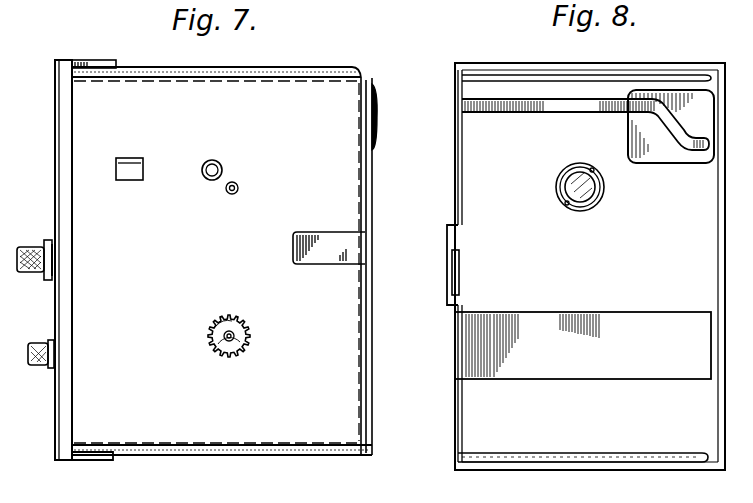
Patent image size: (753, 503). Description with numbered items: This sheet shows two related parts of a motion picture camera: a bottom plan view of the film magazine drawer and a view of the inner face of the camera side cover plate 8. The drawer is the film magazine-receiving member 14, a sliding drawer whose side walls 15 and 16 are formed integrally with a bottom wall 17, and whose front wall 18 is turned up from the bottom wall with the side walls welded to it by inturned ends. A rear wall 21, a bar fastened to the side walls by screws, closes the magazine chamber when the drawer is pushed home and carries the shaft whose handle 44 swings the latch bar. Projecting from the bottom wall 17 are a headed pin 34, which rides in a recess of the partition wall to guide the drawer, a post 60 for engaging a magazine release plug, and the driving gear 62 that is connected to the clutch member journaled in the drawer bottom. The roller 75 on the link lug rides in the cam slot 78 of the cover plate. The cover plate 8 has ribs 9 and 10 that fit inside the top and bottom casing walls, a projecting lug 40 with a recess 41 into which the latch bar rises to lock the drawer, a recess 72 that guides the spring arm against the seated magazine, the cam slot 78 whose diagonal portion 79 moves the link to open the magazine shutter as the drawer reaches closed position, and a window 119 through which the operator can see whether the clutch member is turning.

In FIG. 7, the film magazine-receiving member 14 is at (62, 52).
In FIG. 7, the side wall 15 is at (283, 77).
In FIG. 7, the side wall 16 is at (217, 452).
In FIG. 7, the bottom wall 17 is at (295, 430).
In FIG. 7, the front wall 18 is at (366, 173).
In FIG. 7, the rear wall 21 is at (62, 193).
In FIG. 7, the projecting headed pin 34 is at (218, 162).
In FIG. 7, the handle 44 is at (46, 280).
In FIG. 7, the post 60 is at (228, 196).
In FIG. 7, the driving gear 62 is at (218, 352).
In FIG. 7, the roller 75 is at (375, 104).
In FIG. 8, the side cover plate 8 is at (470, 413).
In FIG. 8, the rib 9 is at (510, 75).
In FIG. 8, the rib 10 is at (530, 455).
In FIG. 8, the projecting lug 40 is at (448, 228).
In FIG. 8, the recess 41 is at (452, 260).
In FIG. 8, the recess 72 is at (540, 322).
In FIG. 8, the cam slot 78 is at (482, 108).
In FIG. 8, the diagonal portion of cam slot 79 is at (665, 148).
In FIG. 8, the window 119 is at (567, 200).